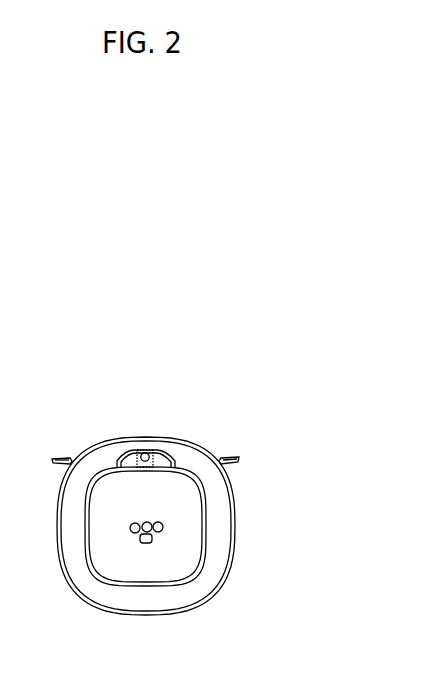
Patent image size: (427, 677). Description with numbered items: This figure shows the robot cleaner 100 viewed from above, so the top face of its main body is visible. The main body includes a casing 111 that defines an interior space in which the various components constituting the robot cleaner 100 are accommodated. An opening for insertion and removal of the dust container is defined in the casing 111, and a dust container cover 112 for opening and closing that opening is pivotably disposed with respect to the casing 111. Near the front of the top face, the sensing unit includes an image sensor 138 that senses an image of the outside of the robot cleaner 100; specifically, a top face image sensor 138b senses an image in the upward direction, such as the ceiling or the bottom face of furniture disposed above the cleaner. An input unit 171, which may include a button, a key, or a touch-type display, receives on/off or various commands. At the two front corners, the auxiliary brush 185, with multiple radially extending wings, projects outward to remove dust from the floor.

The robot cleaner 100 is at (84, 392).
The casing 111 is at (222, 515).
The dust container cover 112 is at (153, 485).
The image sensor 138 is at (149, 427).
The top face image sensor 138b is at (147, 450).
The input unit 171 is at (152, 540).
The auxiliary brush 185 is at (53, 459).